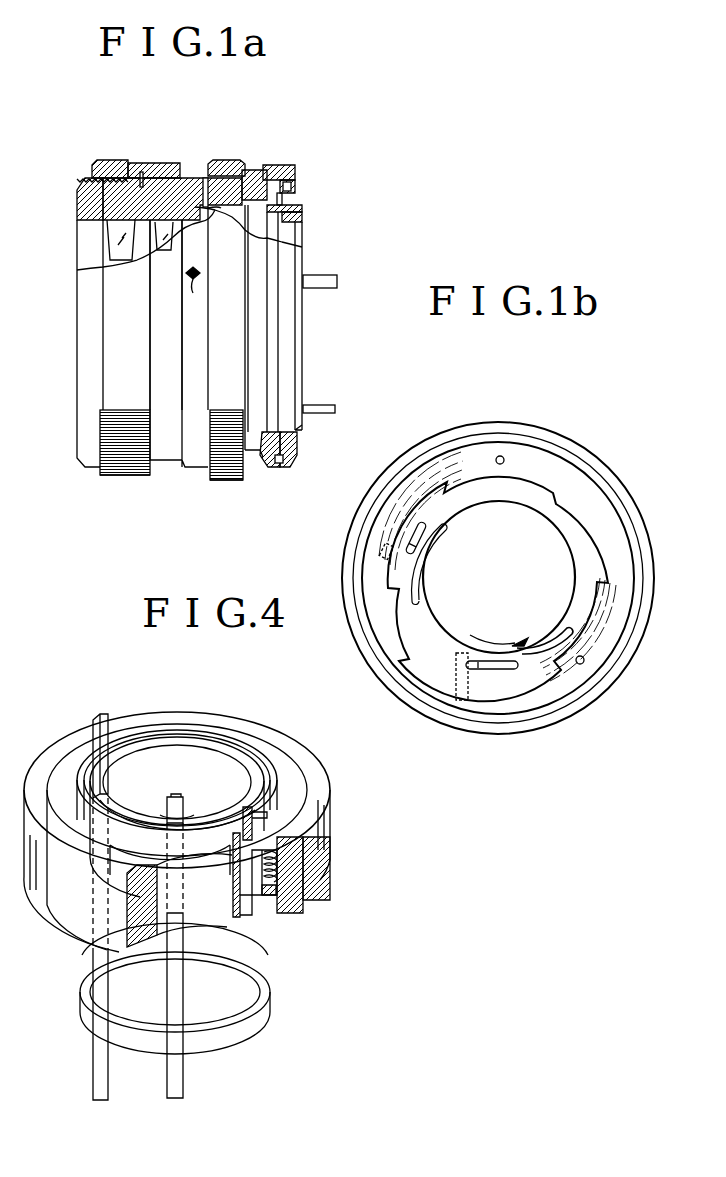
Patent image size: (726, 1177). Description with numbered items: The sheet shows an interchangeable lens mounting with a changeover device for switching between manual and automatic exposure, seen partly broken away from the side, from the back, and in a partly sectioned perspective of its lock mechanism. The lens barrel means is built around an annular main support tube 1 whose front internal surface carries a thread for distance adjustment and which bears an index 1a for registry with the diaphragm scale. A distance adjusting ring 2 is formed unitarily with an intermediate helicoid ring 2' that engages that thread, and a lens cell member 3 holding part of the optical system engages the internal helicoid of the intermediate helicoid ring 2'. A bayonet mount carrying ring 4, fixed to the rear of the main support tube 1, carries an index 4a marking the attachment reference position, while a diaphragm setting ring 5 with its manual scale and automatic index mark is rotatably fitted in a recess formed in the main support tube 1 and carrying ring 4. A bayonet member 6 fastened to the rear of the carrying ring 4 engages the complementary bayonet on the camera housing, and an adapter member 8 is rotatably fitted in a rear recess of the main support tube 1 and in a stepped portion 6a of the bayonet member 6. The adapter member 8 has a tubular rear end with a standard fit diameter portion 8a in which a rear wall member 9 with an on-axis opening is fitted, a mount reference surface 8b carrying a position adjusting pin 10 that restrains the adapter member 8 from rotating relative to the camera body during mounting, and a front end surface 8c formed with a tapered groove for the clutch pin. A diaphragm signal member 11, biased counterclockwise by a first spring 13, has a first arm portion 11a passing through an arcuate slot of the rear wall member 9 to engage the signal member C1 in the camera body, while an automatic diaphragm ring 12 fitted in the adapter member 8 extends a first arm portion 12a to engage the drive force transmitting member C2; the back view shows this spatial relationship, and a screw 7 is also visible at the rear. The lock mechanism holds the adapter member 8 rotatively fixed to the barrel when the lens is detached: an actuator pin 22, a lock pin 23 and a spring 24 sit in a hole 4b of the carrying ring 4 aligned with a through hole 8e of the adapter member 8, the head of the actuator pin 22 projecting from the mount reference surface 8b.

In FIG. 1A, the main support tube 1 is at (190, 170).
In FIG. 1A, the index 1a is at (192, 303).
In FIG. 1A, the distance adjusting ring 2 is at (89, 306).
In FIG. 1A, the intermediate helicoid ring 2' is at (153, 151).
In FIG. 1A, the lens cell member 3 is at (158, 178).
In FIG. 1A, the bayonet mount carrying ring 4 is at (253, 168).
In FIG. 4, the bayonet mount carrying ring 4 is at (313, 842).
In FIG. 1A, the index 4a is at (280, 170).
In FIG. 4, the hole 4b is at (260, 898).
In FIG. 1A, the diaphragm setting ring 5 is at (225, 158).
In FIG. 1A, the bayonet member 6 is at (298, 190).
In FIG. 4, the bayonet member 6 is at (290, 765).
In FIG. 1A, the stepped portion 6a is at (297, 182).
In FIG. 1A, the screw 7 is at (279, 463).
In FIG. 1A, the adapter member 8 is at (271, 215).
In FIG. 1B, the adapter member 8 is at (460, 462).
In FIG. 4, the adapter member 8 is at (238, 830).
In FIG. 1A, the standard fit diameter portion 8a is at (295, 432).
In FIG. 4, the standard fit diameter portion 8a is at (216, 732).
In FIG. 1A, the mount reference surface 8b is at (290, 454).
In FIG. 4, the mount reference surface 8b is at (271, 807).
In FIG. 1A, the front end surface 8c is at (248, 220).
In FIG. 4, the through hole 8e is at (295, 860).
In FIG. 1A, the rear wall member 9 is at (303, 218).
In FIG. 1B, the rear wall member 9 is at (600, 560).
In FIG. 4, the rear wall member 9 is at (174, 725).
In FIG. 1A, the position adjusting pin 10 is at (283, 201).
In FIG. 1B, the position adjusting pin 10 is at (503, 456).
In FIG. 4, the diaphragm signal member 11 is at (95, 1029).
In FIG. 1A, the first arm portion 11a is at (337, 281).
In FIG. 1B, the first arm portion 11a is at (420, 542).
In FIG. 4, the first arm portion 11a is at (102, 716).
In FIG. 4, the automatic diaphragm ring 12 is at (225, 957).
In FIG. 1A, the first arm portion 12a is at (333, 405).
In FIG. 1B, the first arm portion 12a is at (482, 667).
In FIG. 4, the first arm portion 12a is at (176, 795).
In FIG. 1B, the first spring 13 is at (584, 660).
In FIG. 4, the actuator pin 22 is at (285, 837).
In FIG. 4, the lock pin 23 is at (275, 880).
In FIG. 4, the spring 24 is at (291, 900).
In FIG. 1B, the signal member C1 is at (407, 558).
In FIG. 1B, the drive force transmitting member C2 is at (440, 700).